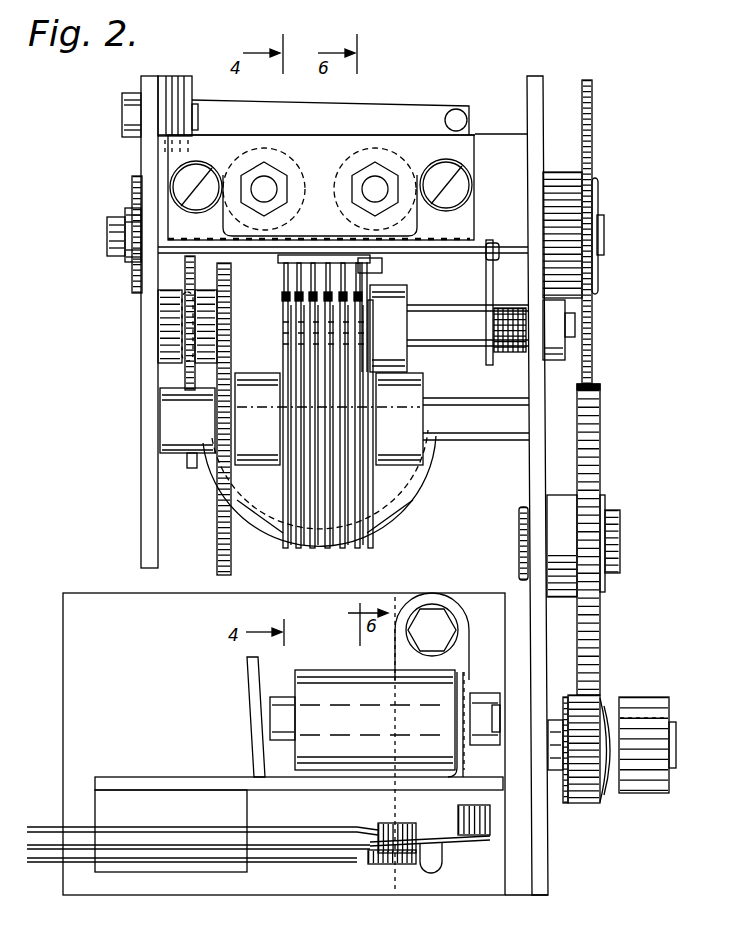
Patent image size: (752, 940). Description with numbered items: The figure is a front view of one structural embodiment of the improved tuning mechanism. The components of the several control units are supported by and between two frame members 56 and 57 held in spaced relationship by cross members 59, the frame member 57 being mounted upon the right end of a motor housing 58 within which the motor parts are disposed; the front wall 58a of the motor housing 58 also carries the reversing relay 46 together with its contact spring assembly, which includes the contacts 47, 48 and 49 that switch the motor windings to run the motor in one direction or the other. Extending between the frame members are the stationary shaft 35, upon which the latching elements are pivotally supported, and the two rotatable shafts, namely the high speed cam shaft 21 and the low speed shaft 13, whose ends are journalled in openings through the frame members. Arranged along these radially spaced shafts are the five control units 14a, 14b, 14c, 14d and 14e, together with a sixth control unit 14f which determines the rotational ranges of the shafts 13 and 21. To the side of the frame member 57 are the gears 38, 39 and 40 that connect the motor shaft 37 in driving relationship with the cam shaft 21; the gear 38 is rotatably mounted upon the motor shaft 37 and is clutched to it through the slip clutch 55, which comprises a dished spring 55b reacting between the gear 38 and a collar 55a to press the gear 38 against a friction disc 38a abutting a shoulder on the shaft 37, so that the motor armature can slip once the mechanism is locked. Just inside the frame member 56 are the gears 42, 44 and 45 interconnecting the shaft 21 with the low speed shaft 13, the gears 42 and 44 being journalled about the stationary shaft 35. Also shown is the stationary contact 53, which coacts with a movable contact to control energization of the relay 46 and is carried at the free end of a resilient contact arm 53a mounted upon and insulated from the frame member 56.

The low speed shaft 13 is at (482, 440).
The control unit 14a is at (286, 553).
The control unit 14b is at (303, 553).
The control unit 14c is at (318, 553).
The control unit 14d is at (334, 553).
The control unit 14e is at (349, 553).
The sixth control unit 14f is at (362, 558).
The high speed cam shaft 21 is at (605, 239).
The stationary shaft 35 is at (457, 345).
The motor shaft 37 is at (555, 770).
The gear 38 is at (596, 805).
The friction disc 38a is at (566, 805).
The gear 39 is at (598, 647).
The gear 40 is at (595, 361).
The gear 42 is at (190, 375).
The gear 44 is at (140, 297).
The gear 45 is at (218, 573).
The relay 46 is at (348, 672).
The contact 47 is at (460, 838).
The contact 48 is at (380, 826).
The contact 49 is at (372, 864).
The stationary contact 53 is at (440, 165).
The resilient contact arm 53a is at (370, 101).
The slip clutch 55 is at (638, 764).
The collar 55a is at (650, 792).
The dished spring 55b is at (610, 795).
The frame member 56 is at (147, 410).
The frame member 57 is at (546, 84).
The motor housing 58 is at (486, 897).
The front wall 58a is at (112, 608).
The support member 59 is at (490, 134).